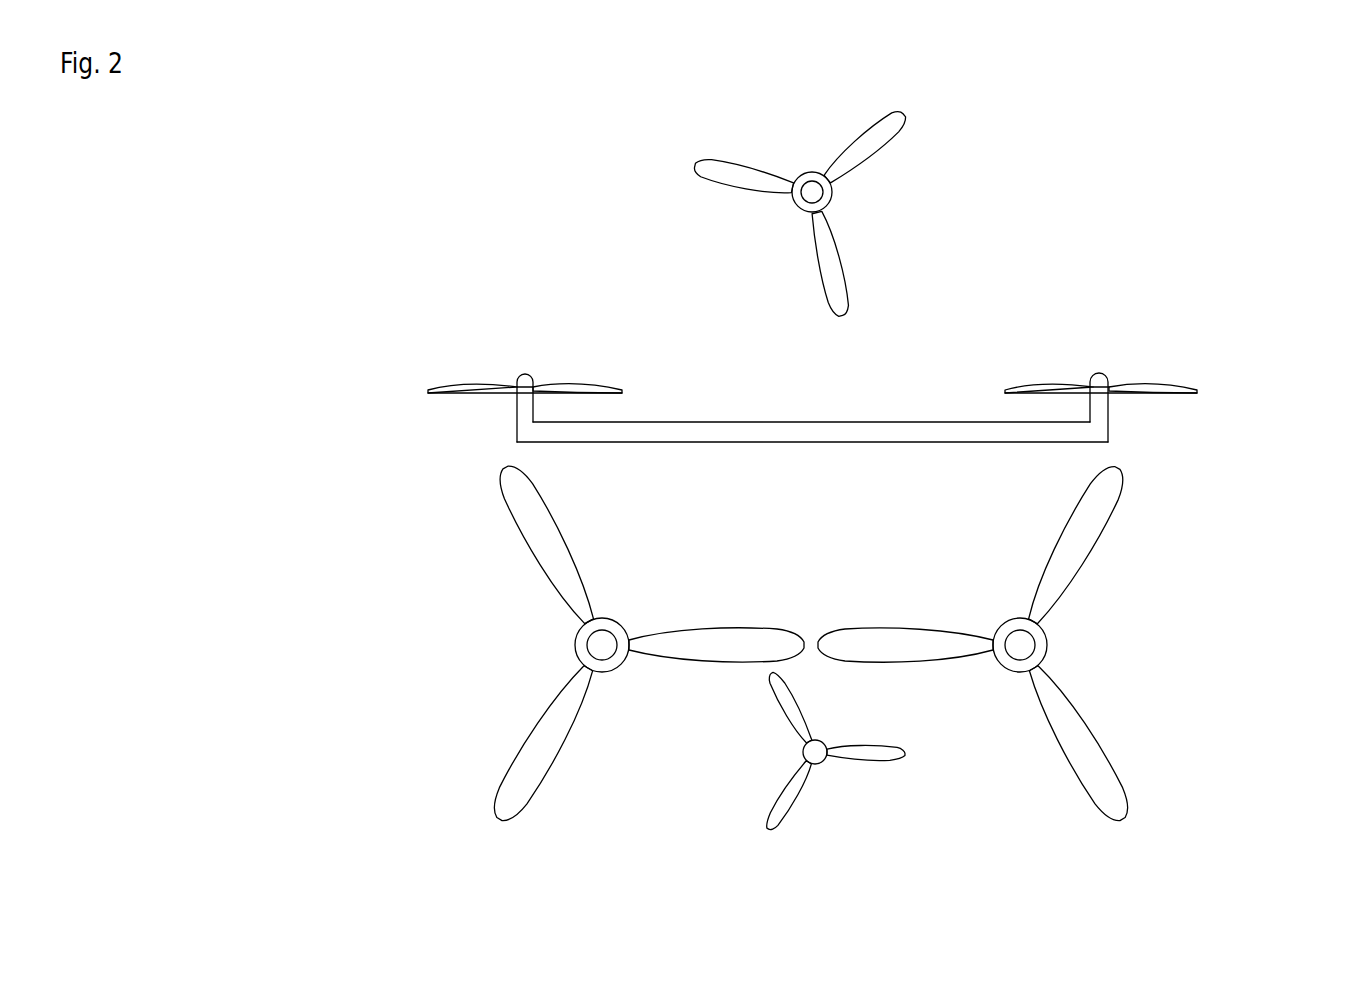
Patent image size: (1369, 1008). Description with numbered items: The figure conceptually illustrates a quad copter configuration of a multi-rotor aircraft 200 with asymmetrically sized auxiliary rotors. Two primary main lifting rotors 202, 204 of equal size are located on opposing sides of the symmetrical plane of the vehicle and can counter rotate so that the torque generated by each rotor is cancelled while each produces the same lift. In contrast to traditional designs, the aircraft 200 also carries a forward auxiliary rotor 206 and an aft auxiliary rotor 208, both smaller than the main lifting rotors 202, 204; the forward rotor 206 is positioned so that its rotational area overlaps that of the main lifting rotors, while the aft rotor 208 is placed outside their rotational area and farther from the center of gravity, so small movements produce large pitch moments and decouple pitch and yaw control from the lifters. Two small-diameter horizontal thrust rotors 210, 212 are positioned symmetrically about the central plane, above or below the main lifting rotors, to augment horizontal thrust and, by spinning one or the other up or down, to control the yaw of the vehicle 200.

The aircraft 200 is at (591, 291).
The main lifting rotor 202 is at (564, 643).
The main lifting rotor 204 is at (1080, 644).
The forward auxiliary rotor 206 is at (792, 735).
The aft auxiliary rotor 208 is at (704, 212).
The horizontal thrust rotor 210 is at (448, 333).
The horizontal thrust rotor 212 is at (1121, 340).